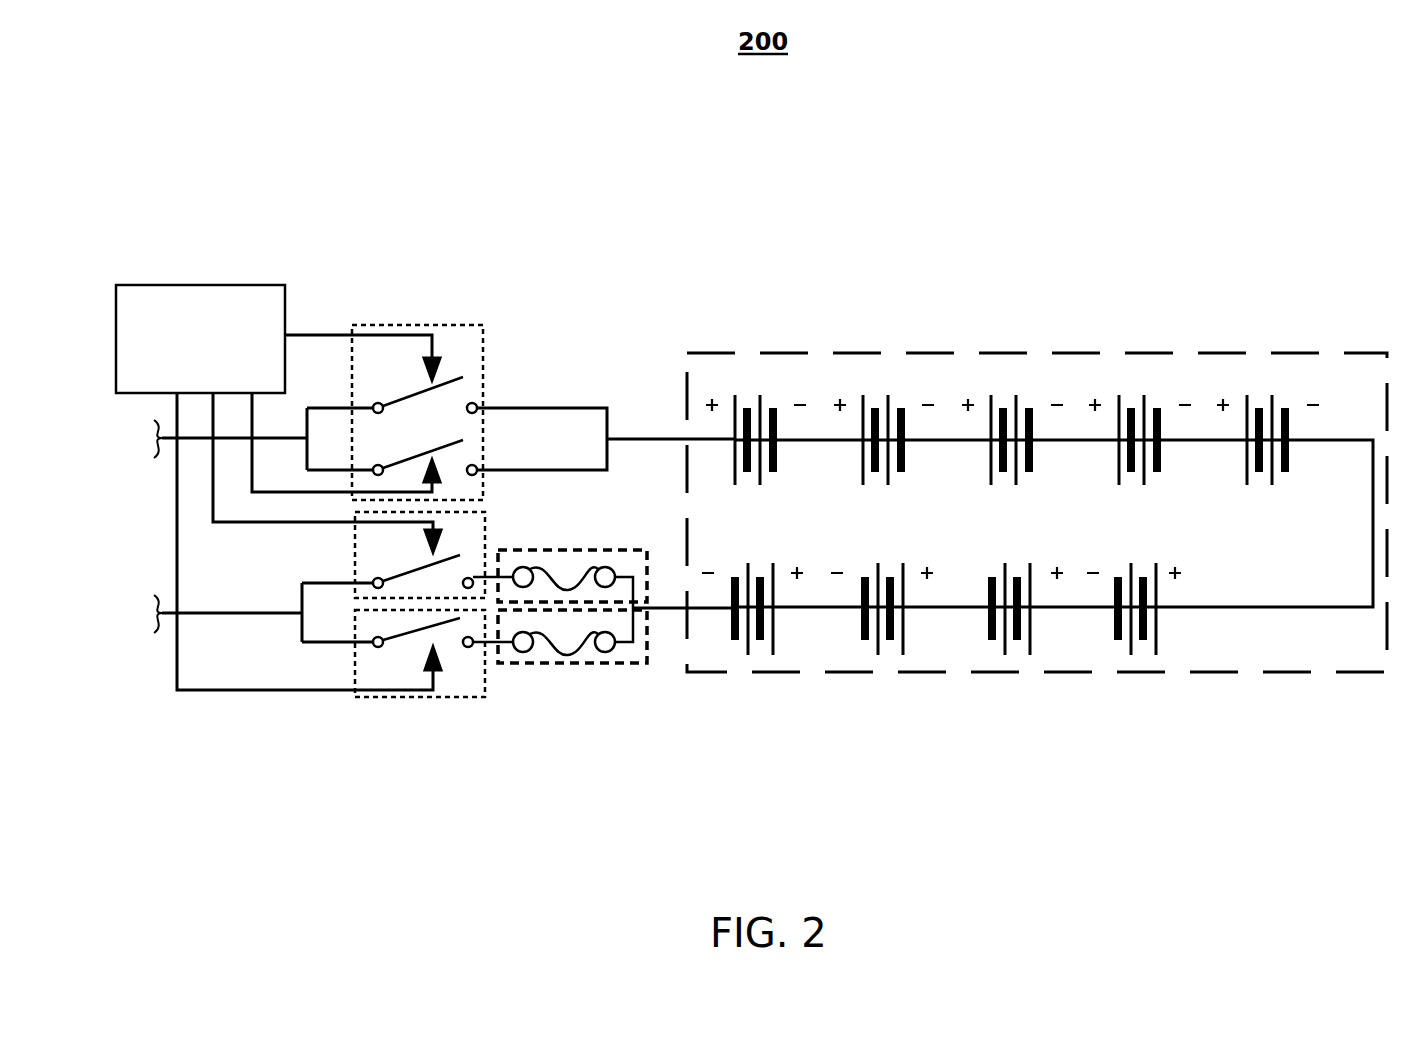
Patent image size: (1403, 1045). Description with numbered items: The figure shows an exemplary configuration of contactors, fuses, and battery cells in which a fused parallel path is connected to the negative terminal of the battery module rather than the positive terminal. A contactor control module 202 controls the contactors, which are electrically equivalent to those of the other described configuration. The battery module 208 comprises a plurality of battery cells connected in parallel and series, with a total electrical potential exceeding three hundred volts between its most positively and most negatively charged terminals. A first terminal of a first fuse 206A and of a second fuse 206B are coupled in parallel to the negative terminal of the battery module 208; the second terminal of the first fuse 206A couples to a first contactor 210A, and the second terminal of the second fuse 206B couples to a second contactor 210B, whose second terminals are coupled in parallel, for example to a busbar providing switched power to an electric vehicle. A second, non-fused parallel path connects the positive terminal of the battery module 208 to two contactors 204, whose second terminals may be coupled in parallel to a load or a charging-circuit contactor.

The contactor control module 202 is at (180, 285).
The contactors 204 is at (437, 325).
The first fuse 206A is at (637, 550).
The second fuse 206B is at (612, 663).
The battery module 208 is at (760, 352).
The first contactor 210A is at (485, 514).
The second contactor 210B is at (445, 697).